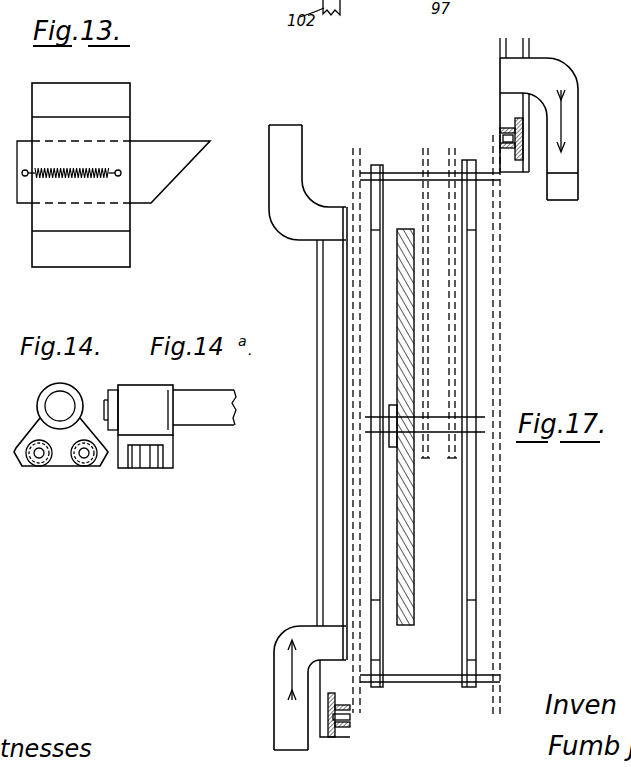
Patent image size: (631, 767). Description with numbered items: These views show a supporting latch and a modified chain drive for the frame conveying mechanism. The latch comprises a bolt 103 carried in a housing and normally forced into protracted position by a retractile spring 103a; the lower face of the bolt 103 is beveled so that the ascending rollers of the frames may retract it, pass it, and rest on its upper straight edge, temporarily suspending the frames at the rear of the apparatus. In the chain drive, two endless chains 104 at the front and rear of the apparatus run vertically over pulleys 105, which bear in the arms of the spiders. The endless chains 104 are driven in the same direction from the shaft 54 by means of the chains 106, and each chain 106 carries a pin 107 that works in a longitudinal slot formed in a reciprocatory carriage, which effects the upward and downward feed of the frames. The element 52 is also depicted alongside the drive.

In FIG. 13, the bolt 103 is at (170, 171).
In FIG. 13, the retractile spring 103a is at (108, 167).
In FIG. 14, the pin 107 is at (61, 407).
In FIG. 14A, the pin 107 is at (195, 399).
In FIG. 17, the pin 107 is at (503, 128).
In FIG. 17, the endless chains 104 is at (357, 448).
In FIG. 17, the pulleys 105 is at (502, 218).
In FIG. 17, the chains 106 is at (428, 315).
In FIG. 17, the rack bar 52 is at (415, 612).
In FIG. 17, the shaft 54 is at (442, 432).